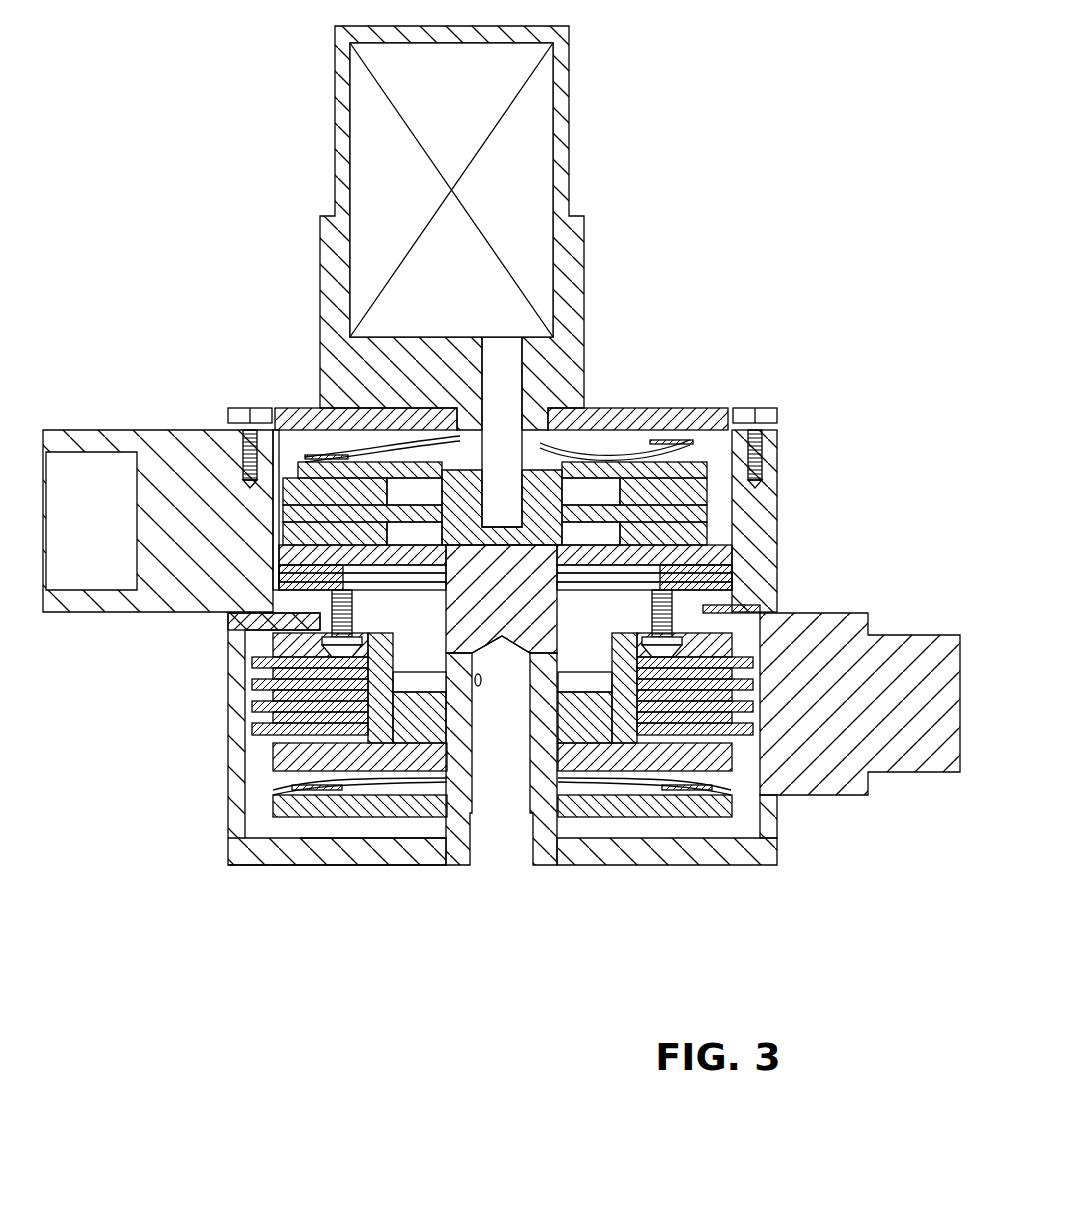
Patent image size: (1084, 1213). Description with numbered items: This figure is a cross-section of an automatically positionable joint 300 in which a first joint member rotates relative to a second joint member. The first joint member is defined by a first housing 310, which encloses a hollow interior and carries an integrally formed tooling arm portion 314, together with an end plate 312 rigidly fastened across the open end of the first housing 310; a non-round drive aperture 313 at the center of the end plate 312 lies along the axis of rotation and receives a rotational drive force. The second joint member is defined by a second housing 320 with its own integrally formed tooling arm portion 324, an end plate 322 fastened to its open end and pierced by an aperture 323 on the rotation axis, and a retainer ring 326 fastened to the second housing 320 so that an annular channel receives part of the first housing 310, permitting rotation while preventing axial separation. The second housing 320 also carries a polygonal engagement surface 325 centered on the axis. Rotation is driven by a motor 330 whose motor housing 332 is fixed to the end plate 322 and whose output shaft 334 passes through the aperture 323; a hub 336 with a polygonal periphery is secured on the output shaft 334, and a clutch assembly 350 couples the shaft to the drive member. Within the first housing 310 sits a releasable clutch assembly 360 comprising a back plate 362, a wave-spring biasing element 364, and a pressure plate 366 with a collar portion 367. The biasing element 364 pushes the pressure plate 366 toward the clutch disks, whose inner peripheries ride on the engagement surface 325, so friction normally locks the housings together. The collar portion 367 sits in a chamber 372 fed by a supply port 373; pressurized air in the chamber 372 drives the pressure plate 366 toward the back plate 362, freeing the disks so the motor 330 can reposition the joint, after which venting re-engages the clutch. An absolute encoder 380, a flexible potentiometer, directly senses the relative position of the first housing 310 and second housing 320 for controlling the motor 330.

The automatically positionable joint 300 is at (730, 158).
The first housing 310 is at (222, 737).
The end plate 312 is at (228, 853).
The drive aperture 313 is at (440, 855).
The tooling arm portion 314 is at (858, 612).
The second housing 320 is at (783, 455).
The end plate 322 is at (720, 408).
The aperture 323 is at (555, 420).
The tooling arm portion 324 is at (108, 428).
The engagement surface 325 is at (448, 670).
The retainer ring 326 is at (455, 662).
The motor 330 is at (575, 100).
The motor housing 332 is at (587, 235).
The output shaft 334 is at (523, 373).
The hub 336 is at (553, 492).
The clutch assembly 350 is at (278, 513).
The releasable clutch assembly 360 is at (240, 697).
The back plate 362 is at (270, 804).
The biasing element 364 is at (283, 784).
The pressure plate 366 is at (273, 765).
The collar portion 367 is at (433, 750).
The chamber 372 is at (584, 683).
The supply port 373 is at (478, 686).
The absolute encoder 380 is at (735, 590).